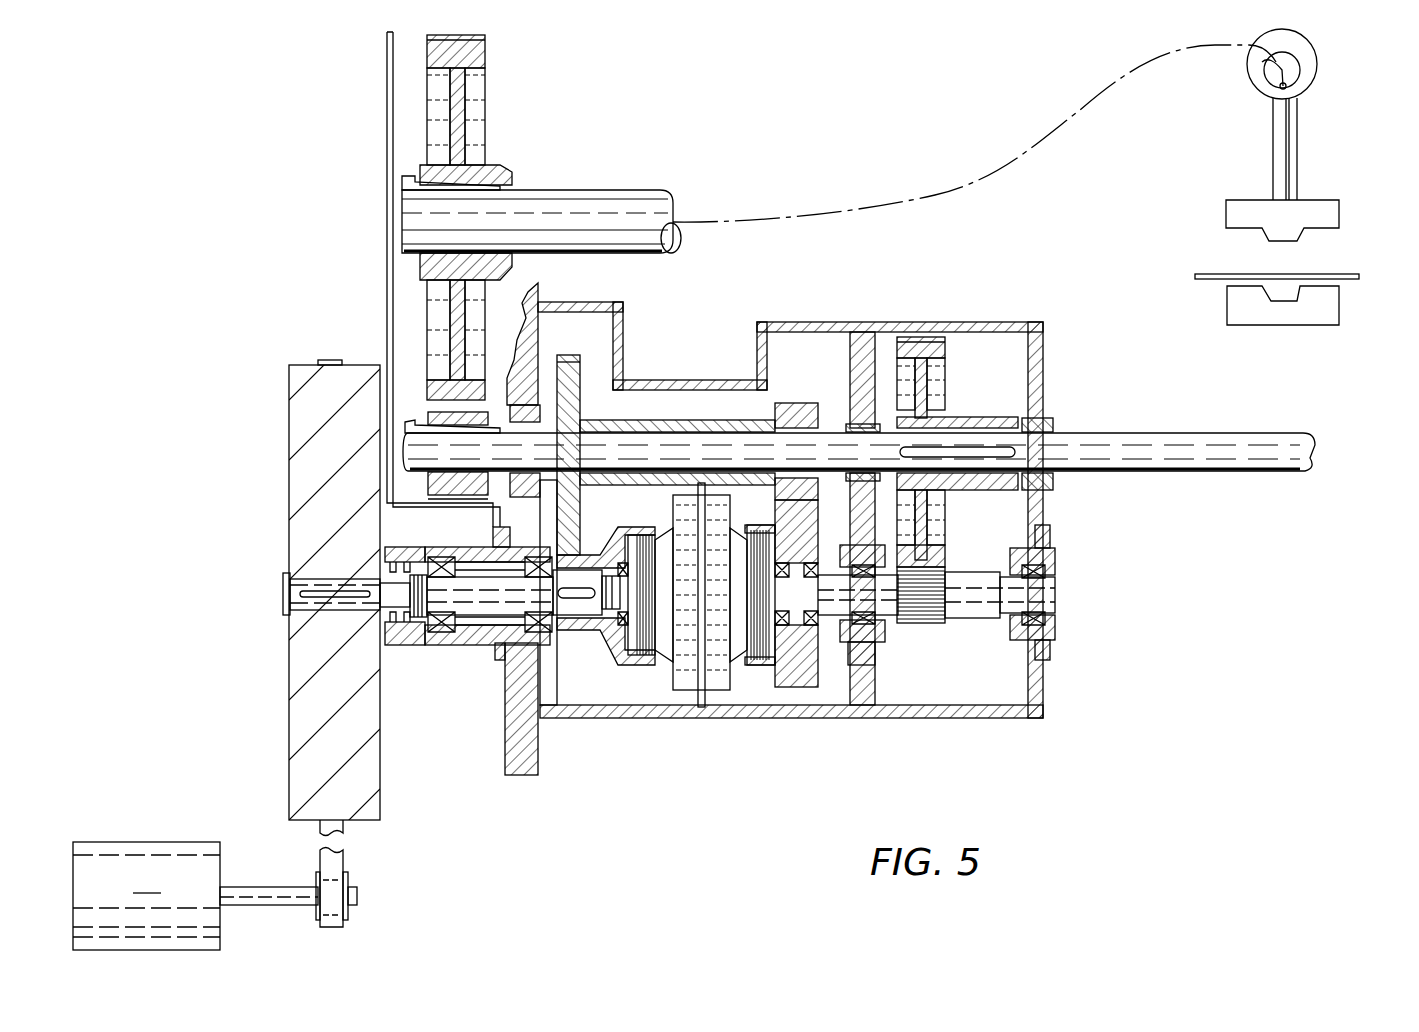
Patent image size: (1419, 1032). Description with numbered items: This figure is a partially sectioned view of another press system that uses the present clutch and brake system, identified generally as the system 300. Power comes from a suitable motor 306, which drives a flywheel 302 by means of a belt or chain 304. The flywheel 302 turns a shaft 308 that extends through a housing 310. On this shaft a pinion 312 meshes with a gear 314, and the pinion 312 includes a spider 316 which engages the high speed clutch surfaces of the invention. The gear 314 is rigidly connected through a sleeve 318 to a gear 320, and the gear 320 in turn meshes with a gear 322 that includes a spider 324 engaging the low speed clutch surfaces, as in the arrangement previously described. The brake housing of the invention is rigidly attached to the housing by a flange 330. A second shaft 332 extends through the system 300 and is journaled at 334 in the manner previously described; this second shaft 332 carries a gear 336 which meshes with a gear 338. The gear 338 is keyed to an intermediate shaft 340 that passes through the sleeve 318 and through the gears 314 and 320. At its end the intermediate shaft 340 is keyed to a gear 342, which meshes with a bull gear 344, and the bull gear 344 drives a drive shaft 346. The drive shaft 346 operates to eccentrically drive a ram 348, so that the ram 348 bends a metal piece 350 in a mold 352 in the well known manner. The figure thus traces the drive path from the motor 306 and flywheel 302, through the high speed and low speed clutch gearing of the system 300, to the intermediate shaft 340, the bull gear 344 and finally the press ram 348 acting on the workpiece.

The clutch and brake system 300 is at (687, 672).
The flywheel 302 is at (343, 738).
The belt or chain 304 is at (330, 893).
The motor 306 is at (193, 858).
The shaft 308 is at (483, 598).
The housing 310 is at (520, 733).
The pinion 312 is at (577, 632).
The gear 314 is at (580, 518).
The spider 316 is at (650, 662).
The sleeve 318 is at (721, 412).
The gear 320 is at (803, 410).
The gear 322 is at (802, 693).
The spider 324 is at (753, 662).
The flange 330 is at (702, 706).
The second shaft 332 is at (867, 603).
The journal 334 is at (610, 636).
The gear 336 is at (925, 597).
The gear 338 is at (932, 352).
The intermediate shaft 340 is at (1140, 447).
The gear 342 is at (462, 483).
The bull gear 344 is at (473, 53).
The drive shaft 346 is at (593, 210).
The ram 348 is at (1288, 221).
The metal piece 350 is at (1326, 275).
The mold 352 is at (1293, 301).